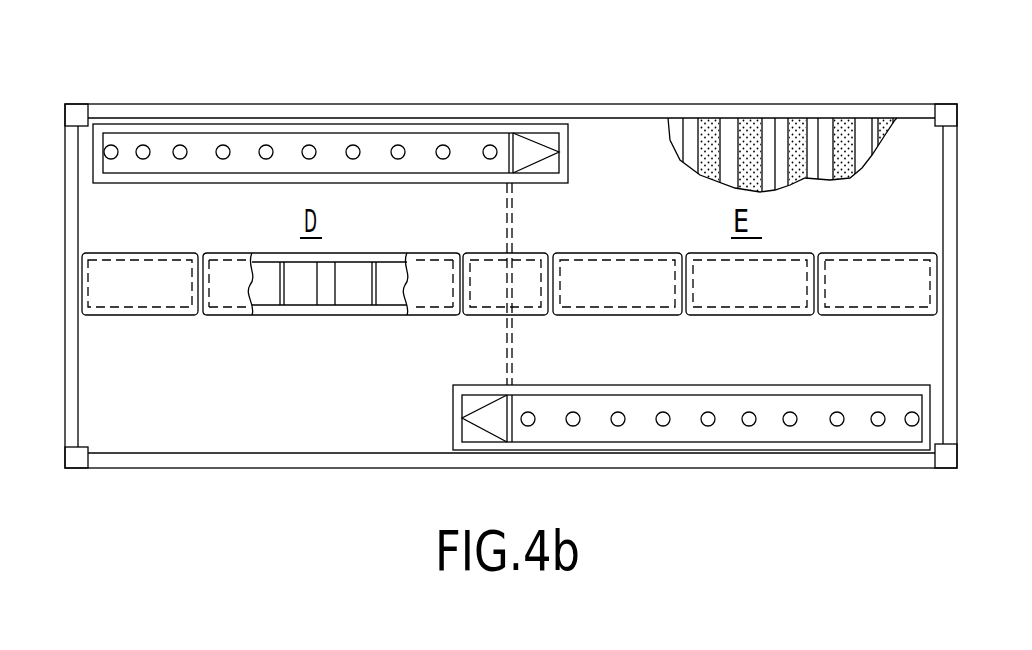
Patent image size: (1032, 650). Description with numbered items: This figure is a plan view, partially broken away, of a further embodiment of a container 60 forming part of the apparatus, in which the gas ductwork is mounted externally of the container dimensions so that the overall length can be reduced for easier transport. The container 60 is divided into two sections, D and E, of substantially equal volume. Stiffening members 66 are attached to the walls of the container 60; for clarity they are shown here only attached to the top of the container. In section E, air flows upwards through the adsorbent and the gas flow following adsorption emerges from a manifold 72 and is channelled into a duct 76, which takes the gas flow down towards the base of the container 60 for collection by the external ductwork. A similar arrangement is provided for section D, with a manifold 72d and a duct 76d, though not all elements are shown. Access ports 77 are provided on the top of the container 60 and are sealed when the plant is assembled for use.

The container 60 is at (976, 132).
The manifold 72d is at (415, 145).
The duct 76d is at (553, 138).
The stiffening members 66 is at (733, 126).
The access ports 77 is at (884, 282).
The manifold 72 is at (773, 430).
The duct 76 is at (483, 420).